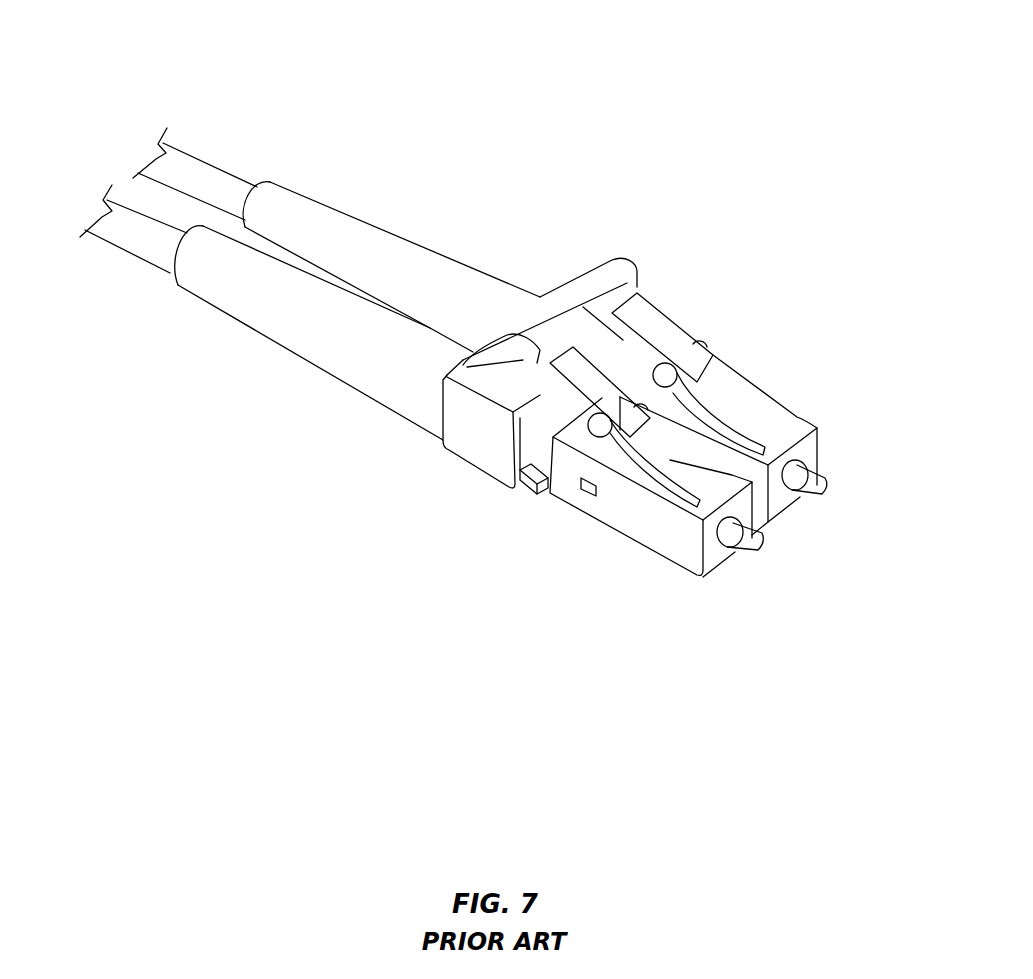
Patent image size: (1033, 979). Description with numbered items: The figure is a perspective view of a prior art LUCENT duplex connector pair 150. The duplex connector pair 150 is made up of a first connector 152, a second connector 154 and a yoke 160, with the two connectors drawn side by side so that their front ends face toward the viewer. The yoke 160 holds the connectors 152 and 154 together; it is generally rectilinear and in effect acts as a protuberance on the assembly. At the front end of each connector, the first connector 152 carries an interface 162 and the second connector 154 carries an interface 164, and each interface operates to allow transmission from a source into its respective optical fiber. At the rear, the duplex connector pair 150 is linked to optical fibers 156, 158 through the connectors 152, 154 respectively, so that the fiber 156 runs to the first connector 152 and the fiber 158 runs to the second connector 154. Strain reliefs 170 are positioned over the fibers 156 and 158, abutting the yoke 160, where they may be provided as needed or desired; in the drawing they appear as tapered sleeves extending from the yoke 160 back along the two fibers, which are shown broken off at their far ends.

The duplex connector pair 150 is at (658, 117).
The first connector 152 is at (713, 567).
The second connector 154 is at (780, 507).
The optical fiber 156 is at (138, 232).
The optical fiber 158 is at (213, 178).
The yoke 160 is at (473, 422).
The interface 162 is at (742, 535).
The interface 164 is at (815, 483).
The strain relief 170 is at (402, 260).